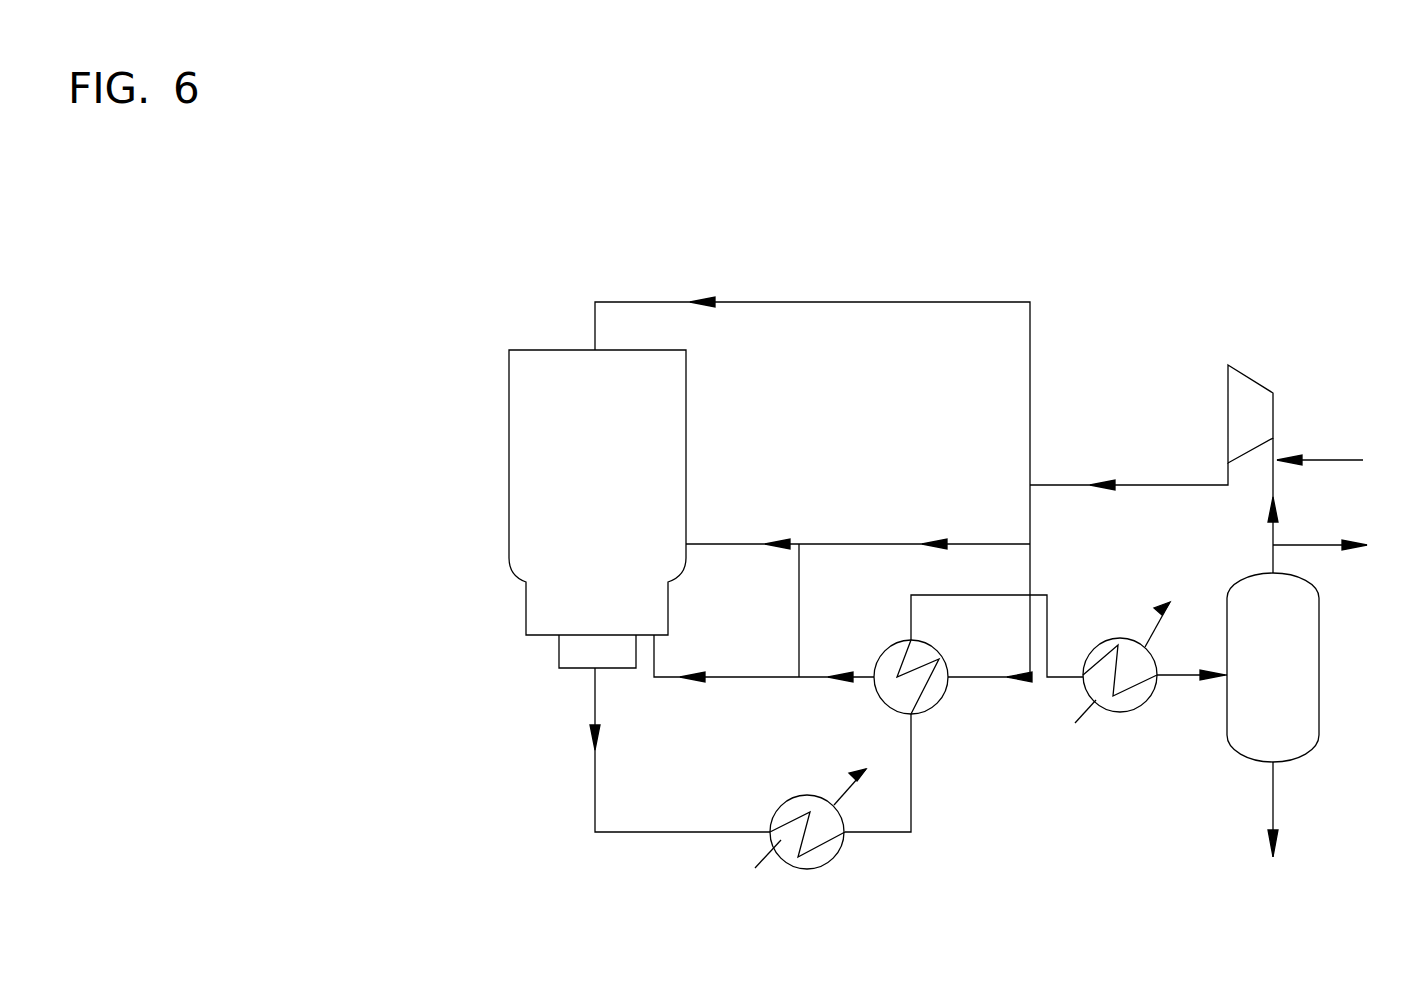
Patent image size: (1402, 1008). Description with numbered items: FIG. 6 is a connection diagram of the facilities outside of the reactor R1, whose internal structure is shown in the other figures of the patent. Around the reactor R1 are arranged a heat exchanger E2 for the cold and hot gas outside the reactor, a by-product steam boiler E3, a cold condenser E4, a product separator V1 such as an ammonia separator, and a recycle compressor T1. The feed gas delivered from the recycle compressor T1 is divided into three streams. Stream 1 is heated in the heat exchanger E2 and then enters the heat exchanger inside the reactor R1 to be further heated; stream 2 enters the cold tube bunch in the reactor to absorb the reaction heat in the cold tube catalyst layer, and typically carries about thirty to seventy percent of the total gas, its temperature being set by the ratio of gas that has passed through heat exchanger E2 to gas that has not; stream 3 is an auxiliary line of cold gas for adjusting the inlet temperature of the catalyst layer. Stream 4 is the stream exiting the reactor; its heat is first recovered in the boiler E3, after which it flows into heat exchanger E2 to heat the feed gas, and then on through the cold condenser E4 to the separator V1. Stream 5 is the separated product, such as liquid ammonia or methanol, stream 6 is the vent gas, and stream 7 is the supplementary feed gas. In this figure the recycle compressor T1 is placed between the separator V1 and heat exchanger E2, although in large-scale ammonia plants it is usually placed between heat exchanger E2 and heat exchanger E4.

The reactor R1 is at (575, 509).
The recycle compressor T1 is at (1154, 447).
The product separator V1 is at (1297, 675).
The heat exchanger E2 is at (969, 673).
The by-product steam boiler E3 is at (817, 840).
The cold condenser E4 is at (1151, 687).
The stream 1 is at (764, 658).
The stream 2 is at (858, 593).
The stream 3 is at (812, 470).
The stream 4 is at (740, 750).
The stream 5 is at (1272, 834).
The stream 6 is at (1335, 546).
The stream 7 is at (1335, 461).